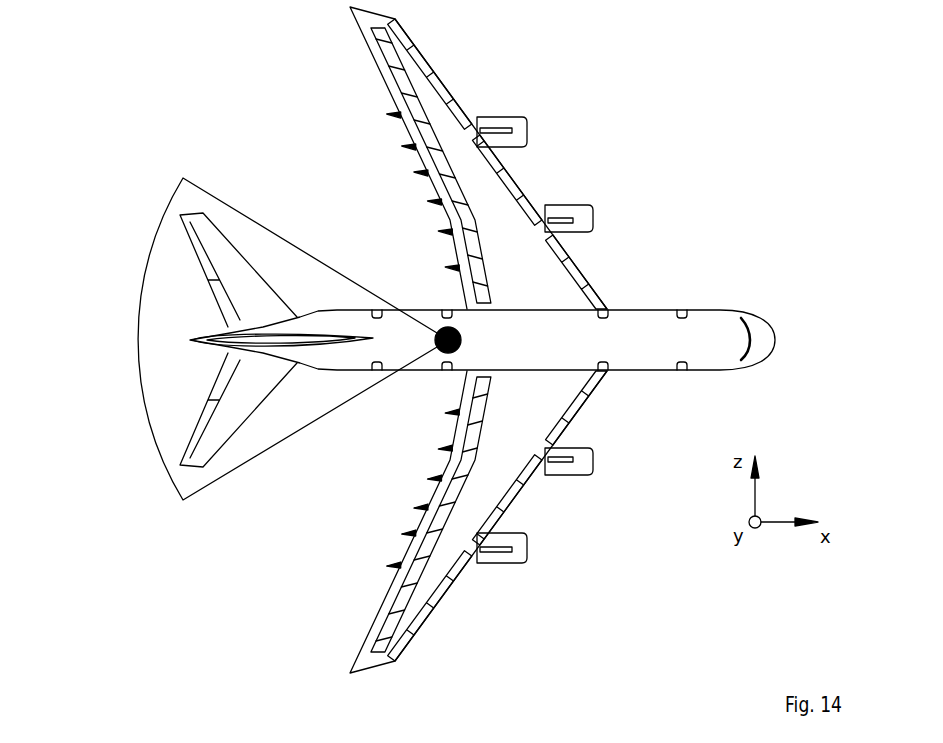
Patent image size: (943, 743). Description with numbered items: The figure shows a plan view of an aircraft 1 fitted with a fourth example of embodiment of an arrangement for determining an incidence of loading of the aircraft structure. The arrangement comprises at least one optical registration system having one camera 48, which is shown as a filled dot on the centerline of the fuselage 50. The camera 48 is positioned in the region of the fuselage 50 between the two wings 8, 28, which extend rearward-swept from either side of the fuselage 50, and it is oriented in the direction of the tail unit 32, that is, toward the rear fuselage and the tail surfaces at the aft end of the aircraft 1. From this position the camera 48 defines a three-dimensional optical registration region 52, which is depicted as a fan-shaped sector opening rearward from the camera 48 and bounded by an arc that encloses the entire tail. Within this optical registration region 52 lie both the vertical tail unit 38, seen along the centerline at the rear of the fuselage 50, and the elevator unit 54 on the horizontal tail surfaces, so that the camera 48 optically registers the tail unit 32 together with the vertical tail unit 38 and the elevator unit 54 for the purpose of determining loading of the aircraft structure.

The aircraft 1 is at (442, 340).
The wing 8 is at (427, 580).
The wing 28 is at (505, 218).
The tail unit 32 is at (165, 336).
The vertical tail unit 38 is at (200, 347).
The camera 48 is at (440, 350).
The fuselage 50 is at (540, 342).
The optical registration region 52 is at (180, 306).
The elevator unit 54 is at (228, 267).